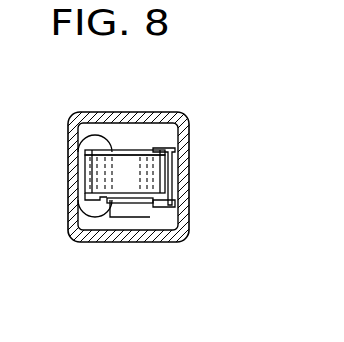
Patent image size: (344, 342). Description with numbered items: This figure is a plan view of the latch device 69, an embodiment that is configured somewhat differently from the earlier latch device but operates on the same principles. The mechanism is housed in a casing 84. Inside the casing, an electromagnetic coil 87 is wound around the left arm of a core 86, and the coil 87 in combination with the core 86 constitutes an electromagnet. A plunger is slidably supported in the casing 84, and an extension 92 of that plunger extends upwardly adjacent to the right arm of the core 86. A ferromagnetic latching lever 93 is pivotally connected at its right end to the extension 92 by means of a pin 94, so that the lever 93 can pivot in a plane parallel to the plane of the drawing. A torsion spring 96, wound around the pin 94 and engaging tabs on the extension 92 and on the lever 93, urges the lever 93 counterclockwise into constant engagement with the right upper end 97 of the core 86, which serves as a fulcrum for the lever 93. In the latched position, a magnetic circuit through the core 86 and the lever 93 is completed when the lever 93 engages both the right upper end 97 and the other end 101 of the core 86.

The latch device 69 is at (153, 97).
The casing 84 is at (168, 110).
The end of the core 101 is at (68, 143).
The electromagnetic coil 87 is at (68, 217).
The ferromagnetic latching lever 93 is at (120, 162).
The pin 94 is at (168, 164).
The extension 92 is at (167, 214).
The core 86 is at (118, 202).
The right upper end of the core 97 is at (143, 204).
The torsion spring 96 is at (152, 207).